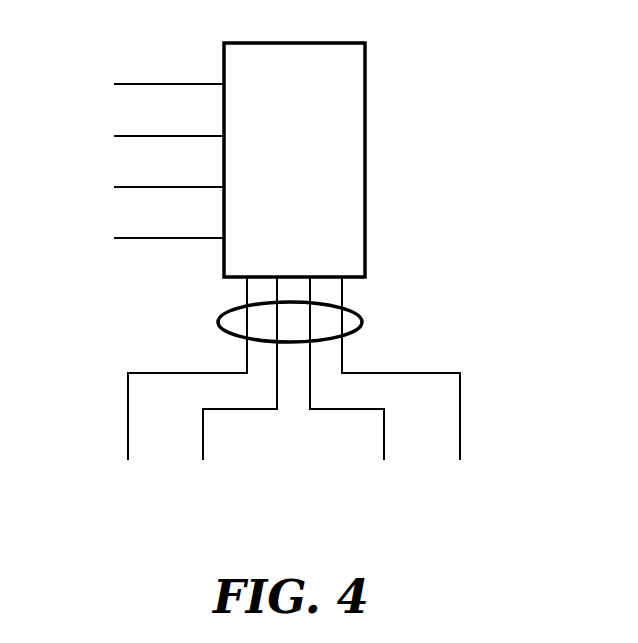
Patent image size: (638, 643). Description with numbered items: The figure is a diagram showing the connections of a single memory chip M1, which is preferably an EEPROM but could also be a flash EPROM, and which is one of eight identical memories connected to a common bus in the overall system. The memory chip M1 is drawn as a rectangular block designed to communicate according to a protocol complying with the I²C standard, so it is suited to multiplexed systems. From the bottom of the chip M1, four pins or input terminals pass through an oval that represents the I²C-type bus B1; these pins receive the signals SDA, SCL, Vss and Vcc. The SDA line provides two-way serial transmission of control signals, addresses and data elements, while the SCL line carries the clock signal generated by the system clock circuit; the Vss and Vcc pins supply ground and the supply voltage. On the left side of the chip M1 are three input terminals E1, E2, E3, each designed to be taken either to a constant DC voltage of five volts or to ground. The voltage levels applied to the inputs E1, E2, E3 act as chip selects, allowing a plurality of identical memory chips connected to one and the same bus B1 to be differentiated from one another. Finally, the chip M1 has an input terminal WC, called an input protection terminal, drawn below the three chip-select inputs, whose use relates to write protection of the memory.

The memory chip M1 is at (366, 163).
The input terminal E1 is at (150, 85).
The input terminal E2 is at (149, 137).
The input terminal E3 is at (149, 188).
The input protection terminal WC is at (146, 239).
The I²C-type bus B1 is at (362, 322).
The Vss signal Vss is at (178, 387).
The Vcc signal Vcc is at (231, 387).
The SDA line SDA is at (358, 387).
The SCL line SCL is at (414, 387).